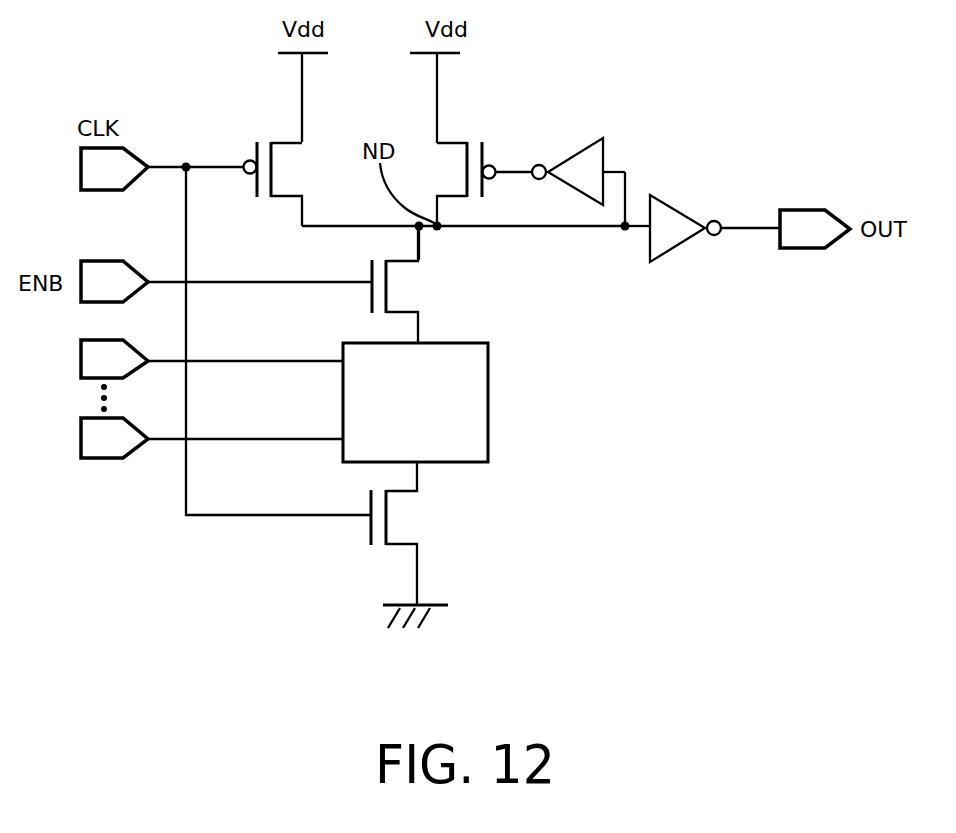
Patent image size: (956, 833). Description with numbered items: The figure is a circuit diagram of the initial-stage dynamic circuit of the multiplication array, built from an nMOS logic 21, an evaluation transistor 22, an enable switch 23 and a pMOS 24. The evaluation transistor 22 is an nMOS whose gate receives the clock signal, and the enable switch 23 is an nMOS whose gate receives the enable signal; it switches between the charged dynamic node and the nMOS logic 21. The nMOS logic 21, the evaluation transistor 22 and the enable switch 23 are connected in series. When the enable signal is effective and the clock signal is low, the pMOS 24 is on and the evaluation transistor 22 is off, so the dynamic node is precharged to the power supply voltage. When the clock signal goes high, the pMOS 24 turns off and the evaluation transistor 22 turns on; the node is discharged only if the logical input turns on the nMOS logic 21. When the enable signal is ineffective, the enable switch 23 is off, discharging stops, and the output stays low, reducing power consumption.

The nMOS logic 21 is at (488, 370).
The evaluation transistor 22 is at (413, 522).
The enable switch 23 is at (420, 293).
The pMOS 24 is at (290, 138).